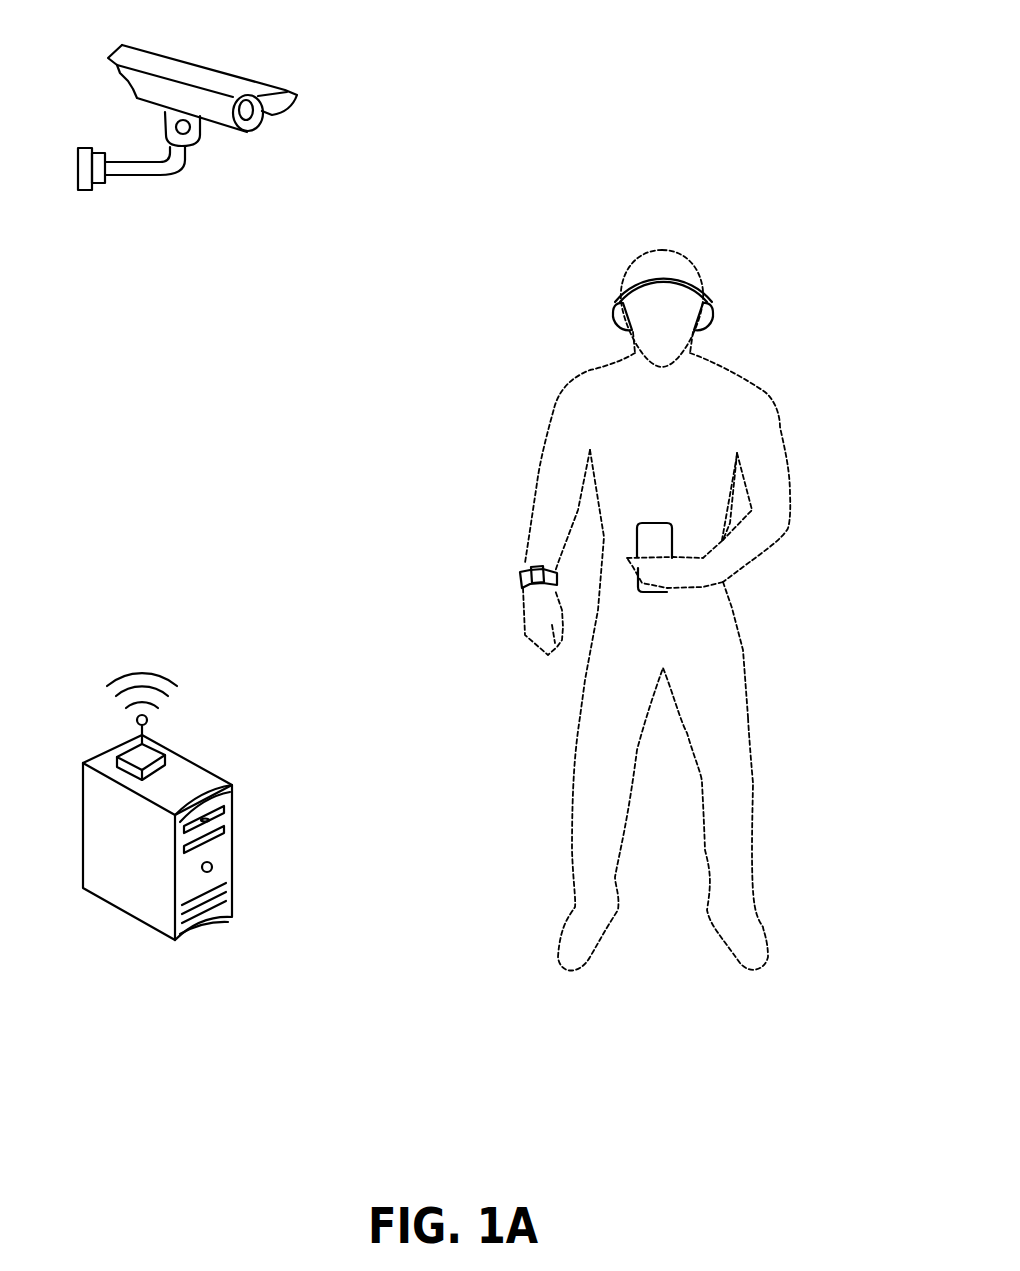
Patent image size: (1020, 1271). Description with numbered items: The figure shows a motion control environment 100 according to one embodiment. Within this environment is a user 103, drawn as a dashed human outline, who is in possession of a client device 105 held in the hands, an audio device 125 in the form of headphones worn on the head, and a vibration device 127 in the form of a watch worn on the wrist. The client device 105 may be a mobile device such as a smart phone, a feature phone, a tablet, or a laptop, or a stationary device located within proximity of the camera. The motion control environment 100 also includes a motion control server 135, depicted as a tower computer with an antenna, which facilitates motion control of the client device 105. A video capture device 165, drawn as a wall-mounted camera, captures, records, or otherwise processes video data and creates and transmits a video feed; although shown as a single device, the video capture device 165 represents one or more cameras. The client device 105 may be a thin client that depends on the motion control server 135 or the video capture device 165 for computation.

The motion control environment 100 is at (870, 1132).
The user 103 is at (765, 390).
The client device 105 is at (650, 522).
The audio device 125 is at (672, 242).
The vibration device 127 is at (530, 571).
The motion control server 135 is at (130, 917).
The video capture device 165 is at (195, 64).